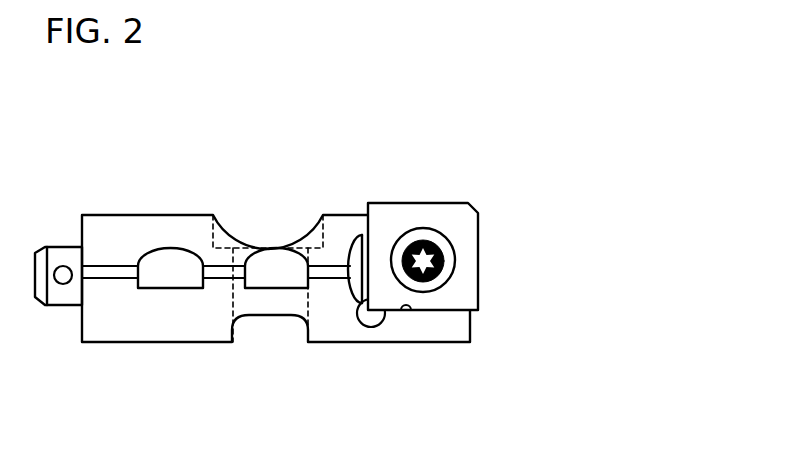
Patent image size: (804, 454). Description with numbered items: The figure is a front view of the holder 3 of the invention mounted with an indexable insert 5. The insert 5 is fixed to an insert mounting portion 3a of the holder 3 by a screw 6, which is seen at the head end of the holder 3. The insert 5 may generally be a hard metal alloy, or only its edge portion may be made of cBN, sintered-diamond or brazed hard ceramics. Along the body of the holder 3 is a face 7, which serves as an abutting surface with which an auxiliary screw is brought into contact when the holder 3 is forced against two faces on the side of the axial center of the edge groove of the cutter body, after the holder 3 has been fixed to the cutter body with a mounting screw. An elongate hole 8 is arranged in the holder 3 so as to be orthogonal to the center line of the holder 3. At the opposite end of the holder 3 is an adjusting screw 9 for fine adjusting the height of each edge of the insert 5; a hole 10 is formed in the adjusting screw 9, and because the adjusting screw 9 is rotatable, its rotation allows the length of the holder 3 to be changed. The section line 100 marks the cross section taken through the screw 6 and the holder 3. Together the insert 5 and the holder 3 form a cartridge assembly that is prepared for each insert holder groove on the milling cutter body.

The holder 3 is at (143, 215).
The insert mounting portion 3a is at (408, 306).
The insert 5 is at (394, 203).
The screw 6 is at (440, 277).
The face 7 is at (172, 258).
The elongate hole 8 is at (308, 292).
The adjusting screw 9 is at (61, 253).
The hole 10 is at (63, 283).
The section line 100 is at (423, 375).